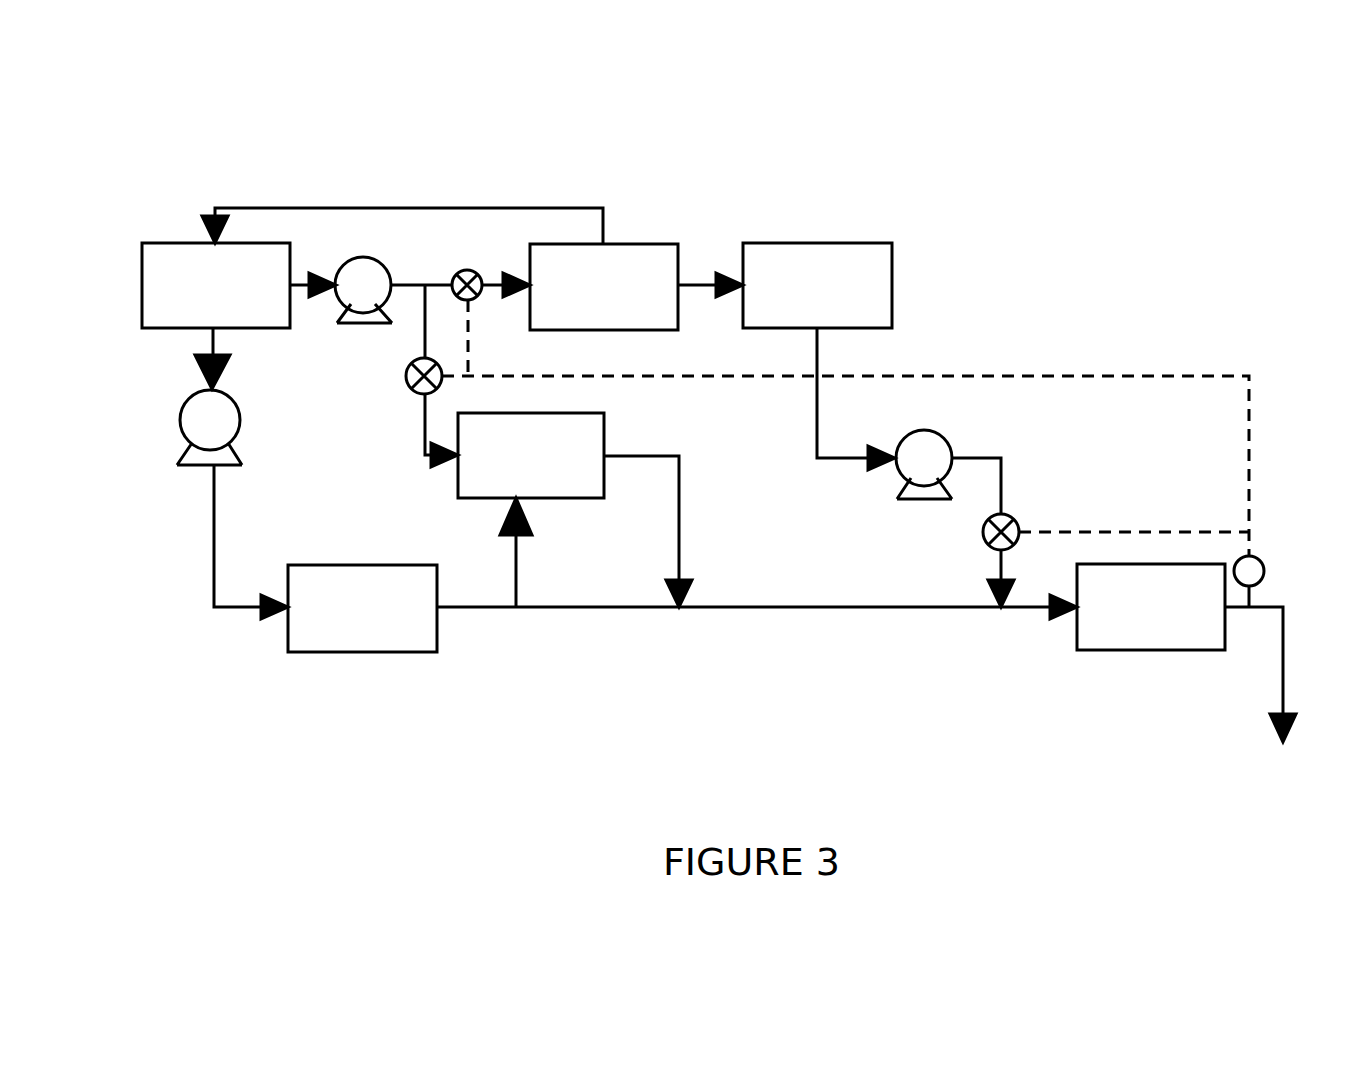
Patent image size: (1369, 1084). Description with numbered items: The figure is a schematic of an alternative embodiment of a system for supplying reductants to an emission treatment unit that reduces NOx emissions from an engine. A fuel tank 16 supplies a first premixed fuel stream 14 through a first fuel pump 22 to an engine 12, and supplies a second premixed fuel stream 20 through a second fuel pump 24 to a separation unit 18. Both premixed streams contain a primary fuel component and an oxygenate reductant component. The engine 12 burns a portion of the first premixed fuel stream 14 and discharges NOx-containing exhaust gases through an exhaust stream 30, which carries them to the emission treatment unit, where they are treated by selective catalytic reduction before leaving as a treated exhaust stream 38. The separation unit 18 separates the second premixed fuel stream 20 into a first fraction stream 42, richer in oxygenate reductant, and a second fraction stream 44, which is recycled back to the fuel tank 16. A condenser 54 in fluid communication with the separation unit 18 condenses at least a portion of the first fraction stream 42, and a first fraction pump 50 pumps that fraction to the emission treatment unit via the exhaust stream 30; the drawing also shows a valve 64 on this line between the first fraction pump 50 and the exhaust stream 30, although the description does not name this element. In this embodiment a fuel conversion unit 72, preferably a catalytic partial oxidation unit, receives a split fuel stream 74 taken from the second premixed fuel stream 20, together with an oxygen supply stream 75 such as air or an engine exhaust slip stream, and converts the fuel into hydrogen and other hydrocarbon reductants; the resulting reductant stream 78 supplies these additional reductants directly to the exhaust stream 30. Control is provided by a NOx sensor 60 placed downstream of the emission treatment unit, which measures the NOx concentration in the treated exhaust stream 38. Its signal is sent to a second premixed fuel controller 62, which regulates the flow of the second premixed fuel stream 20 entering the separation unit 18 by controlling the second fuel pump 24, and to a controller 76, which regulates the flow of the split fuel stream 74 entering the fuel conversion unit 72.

The engine 12 is at (357, 652).
The first premixed fuel stream 14 is at (213, 549).
The fuel tank 16 is at (142, 285).
The separation unit 18 is at (640, 244).
The second premixed fuel stream 20 is at (408, 285).
The first fuel pump 22 is at (181, 429).
The second fuel pump 24 is at (357, 264).
The exhaust stream 30 is at (830, 607).
The treated exhaust stream 38 is at (1283, 683).
The first fraction stream 42 is at (700, 285).
The second fraction stream 44 is at (535, 208).
The first fraction pump 50 is at (953, 446).
The condenser 54 is at (830, 243).
The NOx sensor 60 is at (1262, 560).
The second premixed fuel controller 62 is at (480, 274).
The valve 64 is at (1013, 516).
The fuel conversion unit 72 is at (605, 431).
The split fuel stream 74 is at (424, 429).
The oxygen supply stream 75 is at (517, 571).
The controller 76 is at (407, 374).
The reductant stream 78 is at (680, 518).